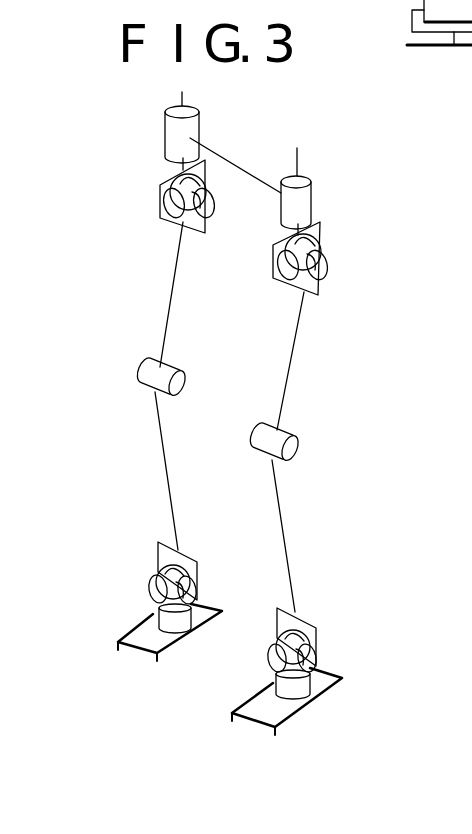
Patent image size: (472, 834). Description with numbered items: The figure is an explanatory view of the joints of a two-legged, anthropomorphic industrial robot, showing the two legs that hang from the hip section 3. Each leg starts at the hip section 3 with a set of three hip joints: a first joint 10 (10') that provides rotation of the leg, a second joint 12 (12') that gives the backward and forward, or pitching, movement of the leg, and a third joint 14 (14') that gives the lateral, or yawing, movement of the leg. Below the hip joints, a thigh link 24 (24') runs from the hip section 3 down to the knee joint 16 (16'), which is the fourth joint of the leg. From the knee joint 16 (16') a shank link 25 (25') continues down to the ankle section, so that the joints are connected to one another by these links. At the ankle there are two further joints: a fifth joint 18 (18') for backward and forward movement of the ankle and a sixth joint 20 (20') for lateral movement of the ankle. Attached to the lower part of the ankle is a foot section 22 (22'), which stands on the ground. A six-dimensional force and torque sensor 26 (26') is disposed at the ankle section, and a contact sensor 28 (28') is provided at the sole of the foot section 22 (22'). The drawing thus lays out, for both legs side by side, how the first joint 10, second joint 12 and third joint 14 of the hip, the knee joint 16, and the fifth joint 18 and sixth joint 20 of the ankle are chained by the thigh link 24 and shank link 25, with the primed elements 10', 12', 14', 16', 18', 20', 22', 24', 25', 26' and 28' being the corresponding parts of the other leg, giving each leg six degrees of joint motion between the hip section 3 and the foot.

The hip section 3 is at (309, 164).
The first joint 10 is at (329, 205).
The second joint 12 is at (328, 268).
The third joint 14 is at (329, 256).
The knee joint 16 is at (299, 440).
The fifth joint 18 is at (328, 659).
The sixth joint 20 is at (320, 623).
The foot section 22 is at (287, 721).
The thigh link 24 is at (312, 361).
The shank link 25 is at (309, 536).
The six-dimensional force and torque sensor 26 is at (321, 709).
The contact sensor 28 is at (238, 741).
The first joint 10' is at (146, 131).
The second joint 12' is at (207, 210).
The third joint 14' is at (151, 208).
The knee joint 16' is at (138, 386).
The fifth joint 18' is at (205, 581).
The sixth joint 20' is at (138, 571).
The foot section 22' is at (134, 628).
The thigh link 24' is at (195, 294).
The shank link 25' is at (191, 471).
The six-dimensional force and torque sensor 26' is at (182, 649).
The contact sensor 28' is at (123, 673).